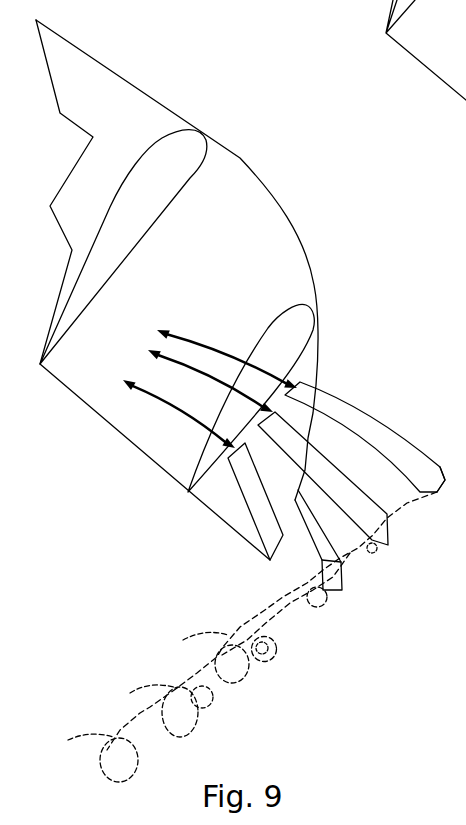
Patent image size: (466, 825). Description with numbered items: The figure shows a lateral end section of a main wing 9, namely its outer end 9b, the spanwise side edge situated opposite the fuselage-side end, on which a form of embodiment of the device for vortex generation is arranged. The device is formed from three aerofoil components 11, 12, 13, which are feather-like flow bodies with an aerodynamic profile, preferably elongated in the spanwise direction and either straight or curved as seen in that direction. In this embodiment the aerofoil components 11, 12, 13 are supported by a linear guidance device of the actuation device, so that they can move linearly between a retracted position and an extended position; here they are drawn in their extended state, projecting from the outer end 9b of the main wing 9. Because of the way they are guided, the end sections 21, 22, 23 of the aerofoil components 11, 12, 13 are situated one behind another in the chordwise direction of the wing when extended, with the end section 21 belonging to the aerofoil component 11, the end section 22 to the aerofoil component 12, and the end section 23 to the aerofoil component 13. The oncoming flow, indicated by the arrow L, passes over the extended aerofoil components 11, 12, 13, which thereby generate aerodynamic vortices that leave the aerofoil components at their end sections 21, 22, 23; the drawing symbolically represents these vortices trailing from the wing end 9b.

The outer end of main wing 9b is at (217, 493).
The main wing 9 is at (465, 186).
The aerofoil component 11 is at (351, 571).
The aerofoil component 12 is at (402, 519).
The aerofoil component 13 is at (386, 405).
The end section 21 is at (322, 582).
The end section 22 is at (381, 545).
The end section 23 is at (432, 468).
The air flow L is at (347, 360).